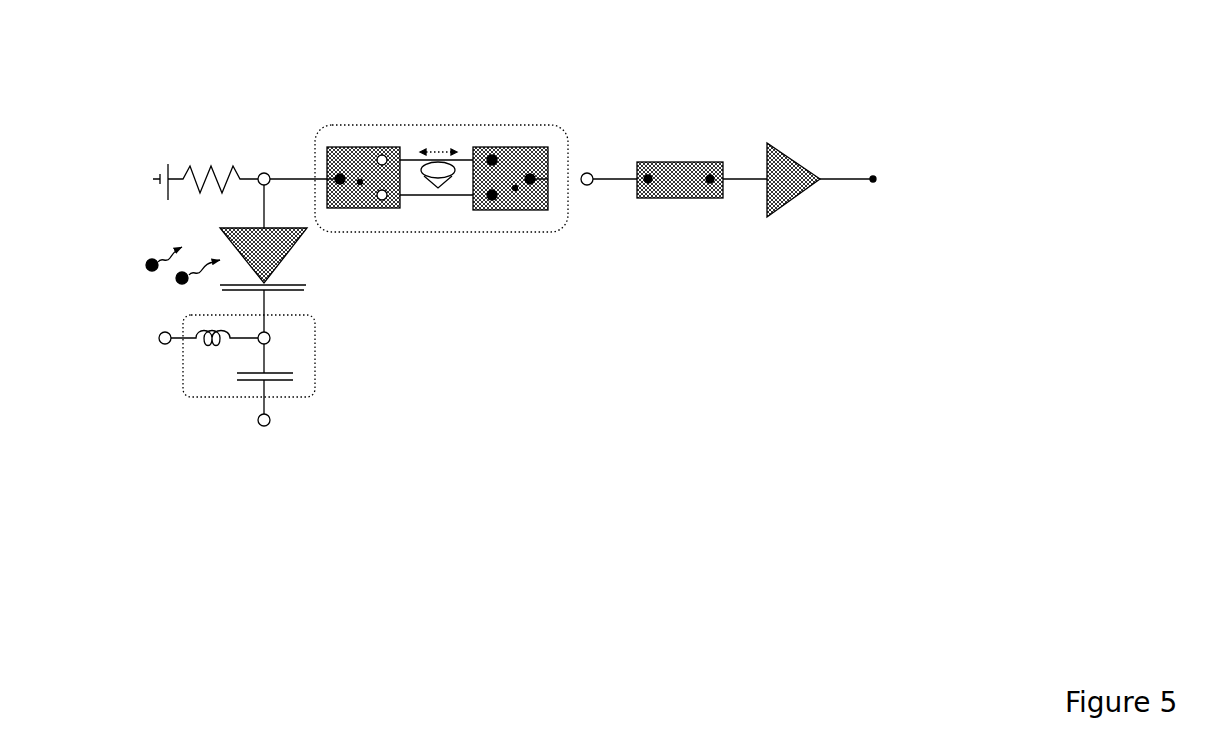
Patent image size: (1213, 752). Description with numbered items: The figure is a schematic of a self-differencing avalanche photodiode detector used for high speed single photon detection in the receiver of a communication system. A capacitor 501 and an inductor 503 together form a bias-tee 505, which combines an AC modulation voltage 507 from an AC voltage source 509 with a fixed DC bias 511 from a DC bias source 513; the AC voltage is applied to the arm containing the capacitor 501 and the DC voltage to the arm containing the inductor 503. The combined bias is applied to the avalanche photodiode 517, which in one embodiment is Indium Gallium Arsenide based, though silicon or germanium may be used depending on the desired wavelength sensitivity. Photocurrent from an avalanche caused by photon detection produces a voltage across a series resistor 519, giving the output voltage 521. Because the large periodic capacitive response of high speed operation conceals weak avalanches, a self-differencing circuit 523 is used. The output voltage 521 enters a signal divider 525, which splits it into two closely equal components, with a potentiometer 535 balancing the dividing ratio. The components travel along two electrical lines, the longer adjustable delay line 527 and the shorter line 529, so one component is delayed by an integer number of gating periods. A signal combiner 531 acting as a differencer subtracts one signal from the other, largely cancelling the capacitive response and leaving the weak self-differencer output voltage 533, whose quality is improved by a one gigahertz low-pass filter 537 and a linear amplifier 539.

The capacitor 501 is at (293, 392).
The inductor 503 is at (202, 358).
The bias-tee 505 is at (318, 352).
The AC modulation voltage 507 is at (277, 432).
The AC voltage source 509 is at (231, 450).
The fixed DC bias 511 is at (148, 327).
The DC bias source 513 is at (140, 382).
The avalanche photodiode 517 is at (303, 253).
The series resistor 519 is at (207, 157).
The output voltage 521 is at (267, 130).
The self-differencing circuit 523 is at (540, 123).
The signal divider 525 is at (366, 157).
The electrical delay line 527 is at (440, 188).
The electrical line 529 is at (420, 200).
The signal combiner 531 is at (517, 190).
The self-differencer output voltage 533 is at (594, 182).
The potentiometer 535 is at (362, 180).
The low-pass filter 537 is at (683, 205).
The linear amplifier 539 is at (796, 198).